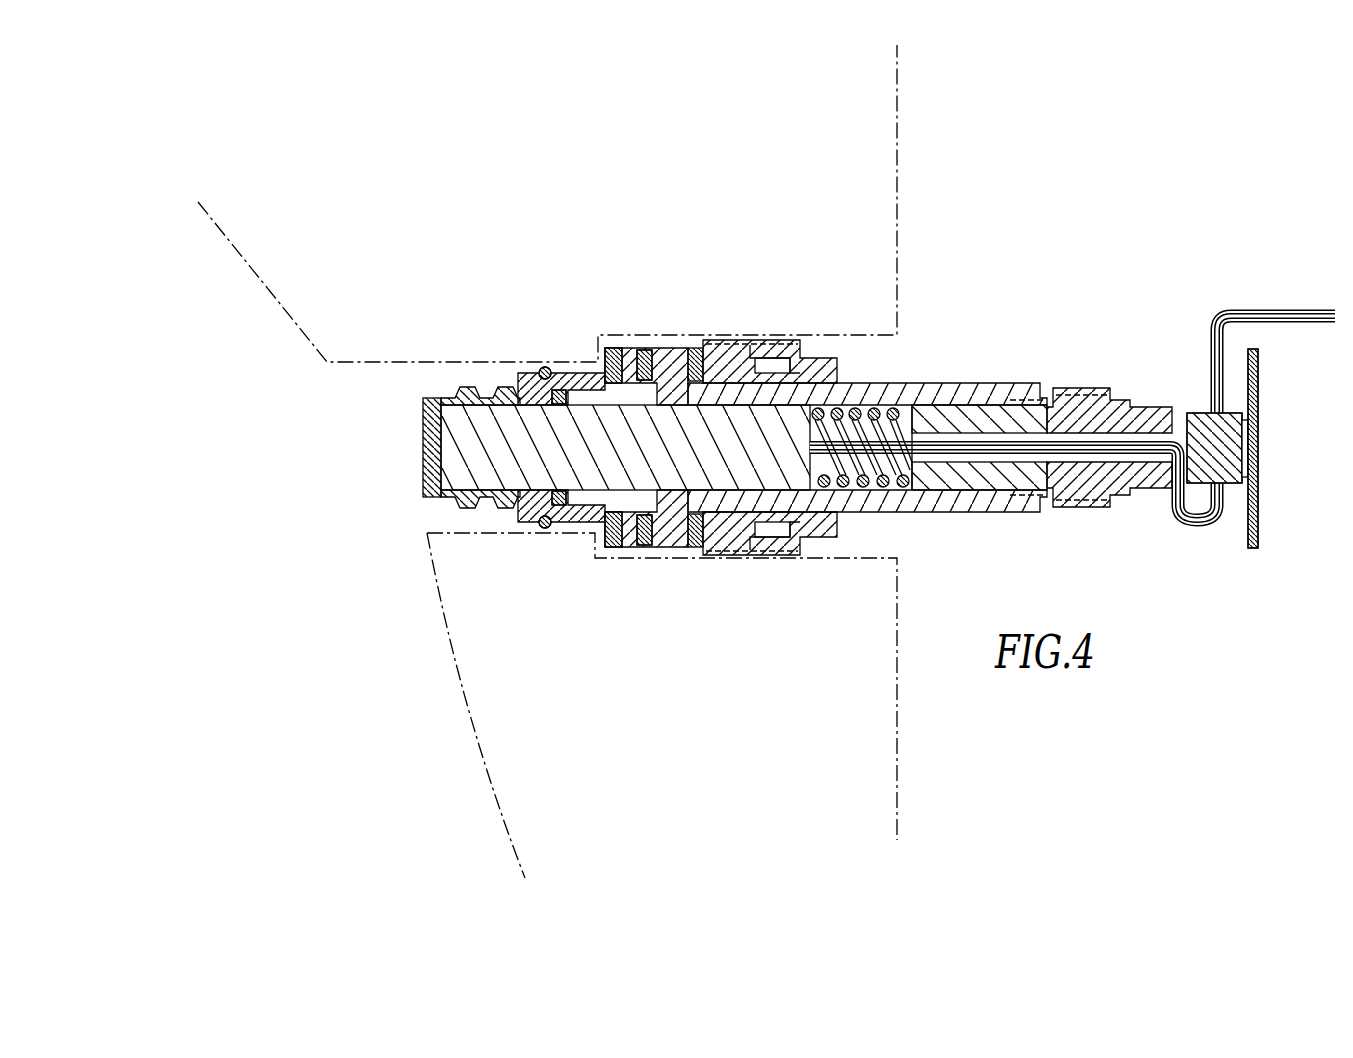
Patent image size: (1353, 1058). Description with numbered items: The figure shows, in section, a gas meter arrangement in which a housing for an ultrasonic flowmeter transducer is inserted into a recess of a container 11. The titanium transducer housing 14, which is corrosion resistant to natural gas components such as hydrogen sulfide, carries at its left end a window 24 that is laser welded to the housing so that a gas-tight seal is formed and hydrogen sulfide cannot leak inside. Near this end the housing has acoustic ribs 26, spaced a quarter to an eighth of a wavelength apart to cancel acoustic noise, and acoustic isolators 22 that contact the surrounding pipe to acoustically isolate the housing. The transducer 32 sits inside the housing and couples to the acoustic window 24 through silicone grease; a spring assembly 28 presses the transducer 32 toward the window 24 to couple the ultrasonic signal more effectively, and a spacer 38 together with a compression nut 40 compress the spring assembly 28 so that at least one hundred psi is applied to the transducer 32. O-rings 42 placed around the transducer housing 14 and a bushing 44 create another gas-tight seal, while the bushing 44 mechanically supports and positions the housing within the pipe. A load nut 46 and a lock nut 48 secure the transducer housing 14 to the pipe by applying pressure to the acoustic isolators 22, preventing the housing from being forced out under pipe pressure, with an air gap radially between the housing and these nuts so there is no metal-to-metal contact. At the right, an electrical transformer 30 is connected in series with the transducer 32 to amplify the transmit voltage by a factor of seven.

The container 11 is at (669, 230).
The transducer housing 14 is at (858, 383).
The acoustic isolators 22 is at (692, 348).
The window 24 is at (423, 429).
The acoustic ribs 26 is at (463, 510).
The spring assembly 28 is at (906, 407).
The electrical transformer 30 is at (1200, 413).
The transducer 32 is at (487, 400).
The spacer 38 is at (996, 405).
The compression nut 40 is at (1124, 390).
The O-rings 42 is at (575, 524).
The bushing 44 is at (641, 548).
The load nut 46 is at (717, 556).
The lock nut 48 is at (785, 556).